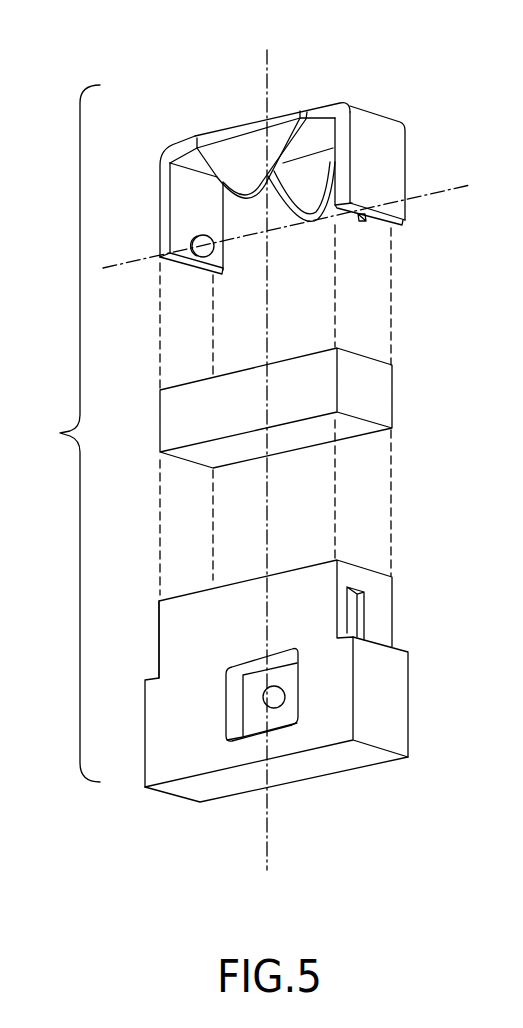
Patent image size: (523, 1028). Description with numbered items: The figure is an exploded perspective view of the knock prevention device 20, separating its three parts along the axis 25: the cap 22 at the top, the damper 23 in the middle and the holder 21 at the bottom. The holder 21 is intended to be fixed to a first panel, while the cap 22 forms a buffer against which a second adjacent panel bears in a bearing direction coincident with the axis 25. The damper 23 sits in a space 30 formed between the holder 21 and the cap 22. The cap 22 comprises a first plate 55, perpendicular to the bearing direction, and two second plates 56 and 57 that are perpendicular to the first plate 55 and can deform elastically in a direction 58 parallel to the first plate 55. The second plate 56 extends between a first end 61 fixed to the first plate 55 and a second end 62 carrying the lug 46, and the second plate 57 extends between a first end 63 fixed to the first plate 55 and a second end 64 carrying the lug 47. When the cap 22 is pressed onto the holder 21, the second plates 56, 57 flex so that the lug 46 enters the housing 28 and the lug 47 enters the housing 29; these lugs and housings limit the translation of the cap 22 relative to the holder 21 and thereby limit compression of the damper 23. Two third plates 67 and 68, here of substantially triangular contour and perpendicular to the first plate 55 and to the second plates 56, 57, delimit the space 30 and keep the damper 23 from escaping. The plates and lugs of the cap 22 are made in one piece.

The knock prevention device 20 is at (61, 433).
The holder 21 is at (273, 670).
The cap 22 is at (283, 189).
The damper 23 is at (377, 397).
The axis 25 is at (266, 78).
The housing 28 is at (355, 620).
The housing 29 is at (159, 648).
The space 30 is at (313, 138).
The lug 46 is at (363, 222).
The lug 47 is at (192, 240).
The first plate 55 is at (180, 150).
The second plate 56 is at (387, 178).
The second plate 57 is at (158, 200).
The direction 58 is at (118, 268).
The first end 61 is at (390, 117).
The second end 62 is at (392, 224).
The first end 63 is at (167, 157).
The second end 64 is at (203, 271).
The third plate 67 is at (245, 183).
The third plate 68 is at (300, 202).